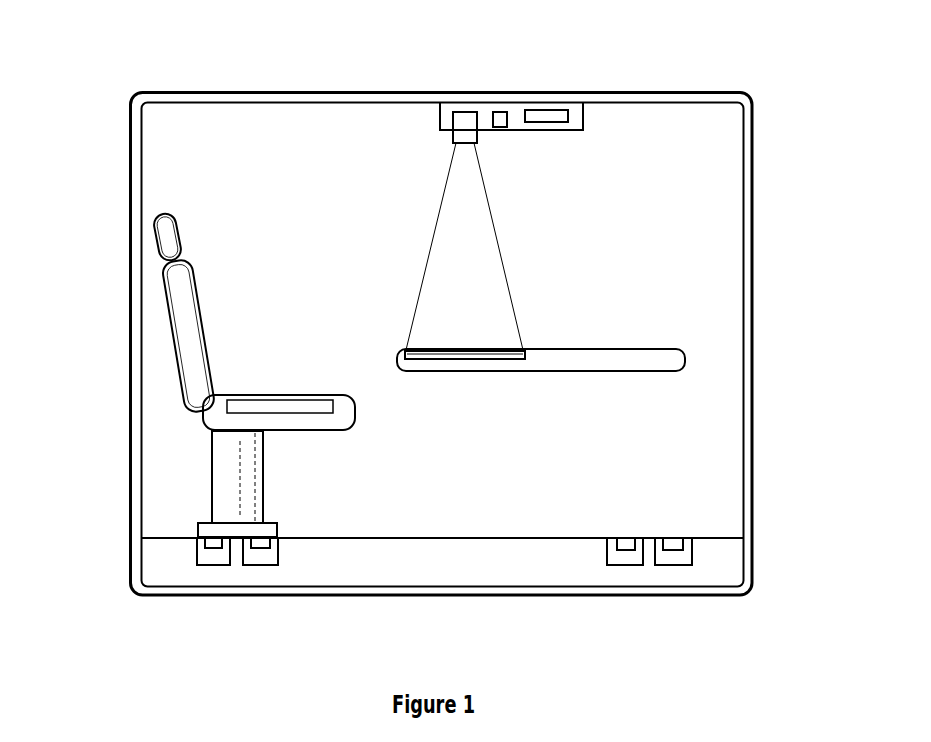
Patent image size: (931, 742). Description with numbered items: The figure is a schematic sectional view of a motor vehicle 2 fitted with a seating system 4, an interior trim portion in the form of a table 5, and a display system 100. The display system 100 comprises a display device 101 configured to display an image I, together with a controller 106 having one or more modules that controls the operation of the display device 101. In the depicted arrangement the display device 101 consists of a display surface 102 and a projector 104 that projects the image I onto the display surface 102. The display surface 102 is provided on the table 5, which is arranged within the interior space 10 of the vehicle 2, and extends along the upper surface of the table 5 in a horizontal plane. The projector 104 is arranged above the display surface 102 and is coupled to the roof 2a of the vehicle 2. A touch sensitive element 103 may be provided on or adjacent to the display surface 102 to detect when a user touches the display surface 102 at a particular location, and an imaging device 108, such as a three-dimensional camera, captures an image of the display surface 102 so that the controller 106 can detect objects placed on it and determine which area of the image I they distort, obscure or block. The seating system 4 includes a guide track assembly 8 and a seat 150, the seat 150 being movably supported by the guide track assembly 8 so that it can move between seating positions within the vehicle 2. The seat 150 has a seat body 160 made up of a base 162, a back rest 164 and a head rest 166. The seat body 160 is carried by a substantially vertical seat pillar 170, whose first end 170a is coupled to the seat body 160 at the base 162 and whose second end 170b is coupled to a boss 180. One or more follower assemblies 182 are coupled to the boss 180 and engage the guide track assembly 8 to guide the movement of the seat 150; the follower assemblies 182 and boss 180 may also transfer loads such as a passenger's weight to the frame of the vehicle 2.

The motor vehicle 2 is at (766, 256).
The roof 2a is at (299, 93).
The seating system 4 is at (155, 325).
The table 5 is at (638, 368).
The guide track assembly 8 is at (290, 522).
The interior space 10 is at (445, 430).
The display system 100 is at (547, 186).
The display device 101 is at (706, 176).
The display surface 102 is at (539, 355).
The touch sensitive element 103 is at (512, 360).
The projector 104 is at (463, 118).
The controller 106 is at (545, 113).
The imaging device 108 is at (500, 115).
The image I is at (462, 348).
The seat 150 is at (216, 402).
The seat body 160 is at (208, 332).
The base 162 is at (208, 423).
The back rest 164 is at (190, 360).
The head rest 166 is at (160, 228).
The seat pillar 170 is at (186, 477).
The first end of the seat pillar 170a is at (252, 440).
The second end of the seat pillar 170b is at (218, 520).
The boss 180 is at (278, 530).
The follower assembly 182 is at (243, 586).